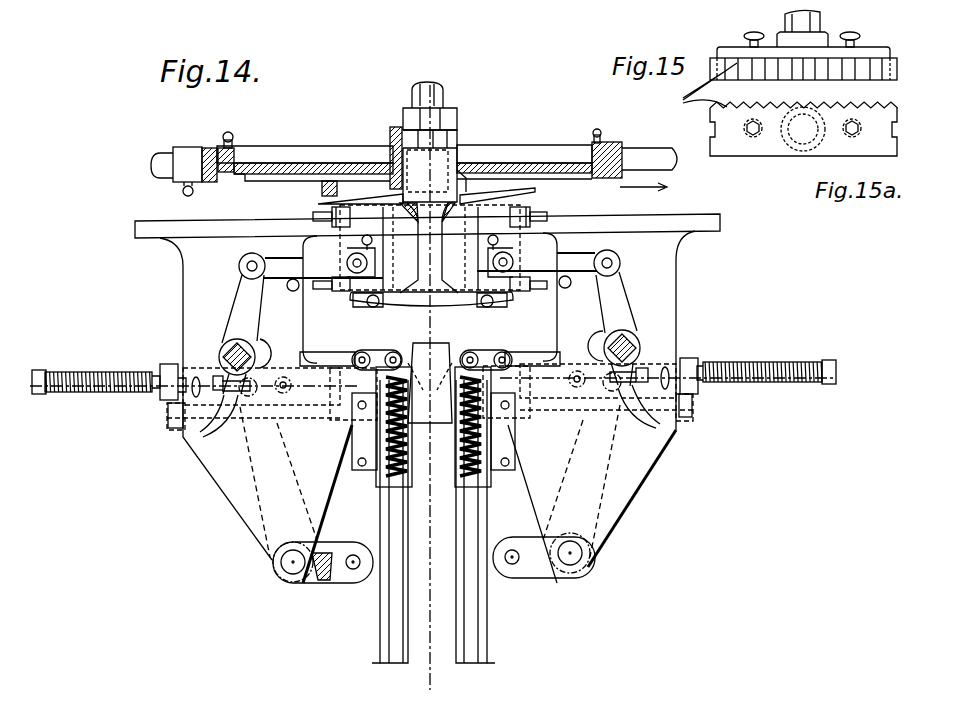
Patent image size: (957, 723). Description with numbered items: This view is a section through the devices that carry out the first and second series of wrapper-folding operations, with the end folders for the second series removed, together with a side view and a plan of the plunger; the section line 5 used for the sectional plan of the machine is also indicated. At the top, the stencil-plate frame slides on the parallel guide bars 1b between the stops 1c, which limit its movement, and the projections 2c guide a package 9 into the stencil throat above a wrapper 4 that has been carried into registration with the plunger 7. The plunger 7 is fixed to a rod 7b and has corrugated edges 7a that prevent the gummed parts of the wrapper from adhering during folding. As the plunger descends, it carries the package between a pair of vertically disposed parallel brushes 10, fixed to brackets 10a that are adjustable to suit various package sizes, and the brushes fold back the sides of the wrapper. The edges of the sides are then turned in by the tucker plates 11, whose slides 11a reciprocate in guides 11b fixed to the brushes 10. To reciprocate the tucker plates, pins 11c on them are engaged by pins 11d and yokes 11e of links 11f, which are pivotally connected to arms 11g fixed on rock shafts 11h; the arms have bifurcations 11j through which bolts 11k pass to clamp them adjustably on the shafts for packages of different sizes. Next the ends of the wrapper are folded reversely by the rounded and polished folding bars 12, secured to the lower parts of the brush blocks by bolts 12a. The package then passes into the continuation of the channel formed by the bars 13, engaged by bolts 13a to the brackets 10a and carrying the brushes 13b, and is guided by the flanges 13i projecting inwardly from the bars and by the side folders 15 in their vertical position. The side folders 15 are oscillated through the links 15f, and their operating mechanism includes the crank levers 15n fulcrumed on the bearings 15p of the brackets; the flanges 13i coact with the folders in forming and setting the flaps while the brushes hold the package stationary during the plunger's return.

In FIG. 14, the parallel guide bars 1b is at (156, 162).
In FIG. 14, the stops 1c is at (184, 147).
In FIG. 14, the projections 2c is at (390, 135).
In FIG. 14, the wrapper 4 is at (500, 190).
In FIG. 14, the section line 5- 5 is at (200, 378).
In FIG. 14, the plunger 7 is at (450, 127).
In FIG. 15, the plunger 7 is at (890, 53).
In FIG. 15A, the plunger 7 is at (742, 152).
In FIG. 15, the corrugated edges 7a is at (698, 87).
In FIG. 14, the plunger rod 7b is at (440, 85).
In FIG. 15, the plunger rod 7b is at (821, 17).
In FIG. 14, the package 9 is at (455, 152).
In FIG. 14, the brushes 10 is at (440, 300).
In FIG. 14, the brackets 10a is at (217, 487).
In FIG. 14, the tucker plates 11 is at (430, 205).
In FIG. 14, the slides 11a is at (547, 210).
In FIG. 14, the guides 11b is at (525, 205).
In FIG. 14, the pins 11c is at (352, 258).
In FIG. 14, the pins 11d is at (372, 238).
In FIG. 14, the yokes 11e is at (490, 262).
In FIG. 14, the links 11f is at (277, 258).
In FIG. 14, the arms 11g is at (237, 300).
In FIG. 14, the rock shafts 11h is at (225, 347).
In FIG. 14, the bifurcations 11j is at (215, 400).
In FIG. 14, the bolts 11k is at (218, 375).
In FIG. 14, the folding bars 12 is at (393, 312).
In FIG. 14, the bolts 12a is at (480, 305).
In FIG. 14, the bars 13 is at (467, 540).
In FIG. 14, the bolts 13a is at (170, 418).
In FIG. 14, the brushes 13b is at (460, 478).
In FIG. 14, the flanges 13i is at (414, 368).
In FIG. 14, the side folders 15 is at (457, 337).
In FIG. 14, the links 15f is at (345, 357).
In FIG. 14, the crank levers 15n is at (320, 585).
In FIG. 14, the bearings 15p is at (268, 577).